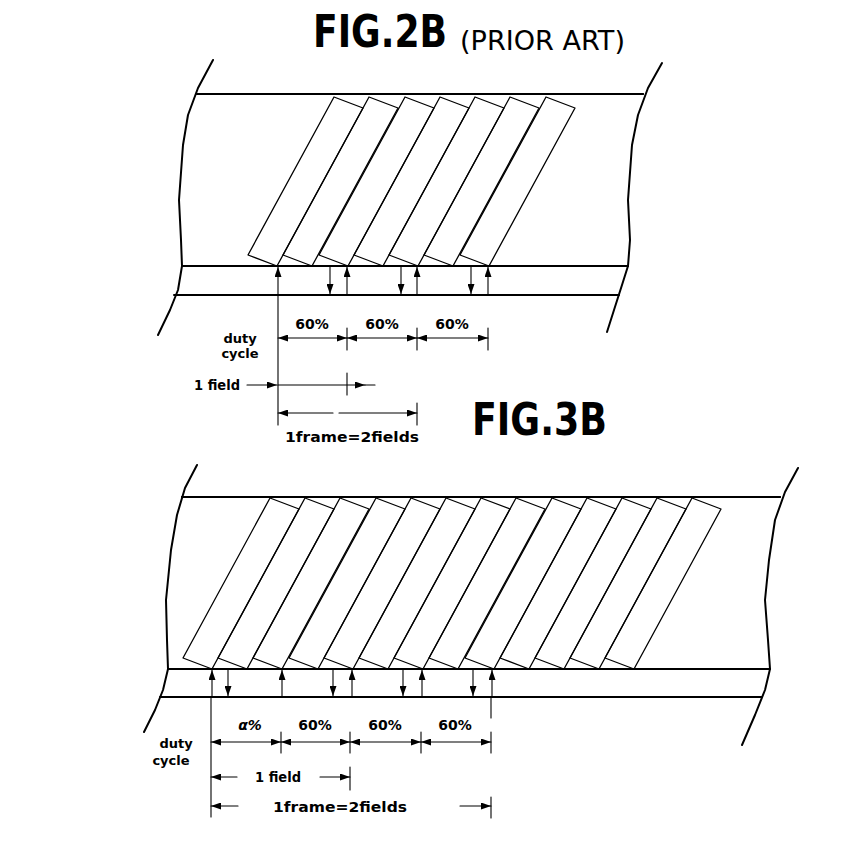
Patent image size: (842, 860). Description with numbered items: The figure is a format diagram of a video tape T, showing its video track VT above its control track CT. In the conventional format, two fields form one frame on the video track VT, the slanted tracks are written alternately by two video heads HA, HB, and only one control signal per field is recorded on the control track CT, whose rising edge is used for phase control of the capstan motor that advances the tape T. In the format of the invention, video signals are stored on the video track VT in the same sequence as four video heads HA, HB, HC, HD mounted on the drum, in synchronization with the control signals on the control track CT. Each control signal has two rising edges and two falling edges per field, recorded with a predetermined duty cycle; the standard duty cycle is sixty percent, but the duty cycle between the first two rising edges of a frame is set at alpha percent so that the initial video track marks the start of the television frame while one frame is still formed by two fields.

In FIG. 2B, the video track VT is at (203, 147).
In FIG. 3B, the video track VT is at (190, 552).
In FIG. 2B, the video tape T is at (178, 200).
In FIG. 3B, the video tape T is at (175, 603).
In FIG. 2B, the control track CT is at (198, 278).
In FIG. 3B, the control track CT is at (189, 682).
In FIG. 2B, the video head HA is at (411, 181).
In FIG. 3B, the video head HA is at (452, 583).
In FIG. 2B, the video head HB is at (411, 181).
In FIG. 3B, the video head HB is at (417, 583).
In FIG. 3B, the video head HC is at (452, 583).
In FIG. 3B, the video head HD is at (487, 583).